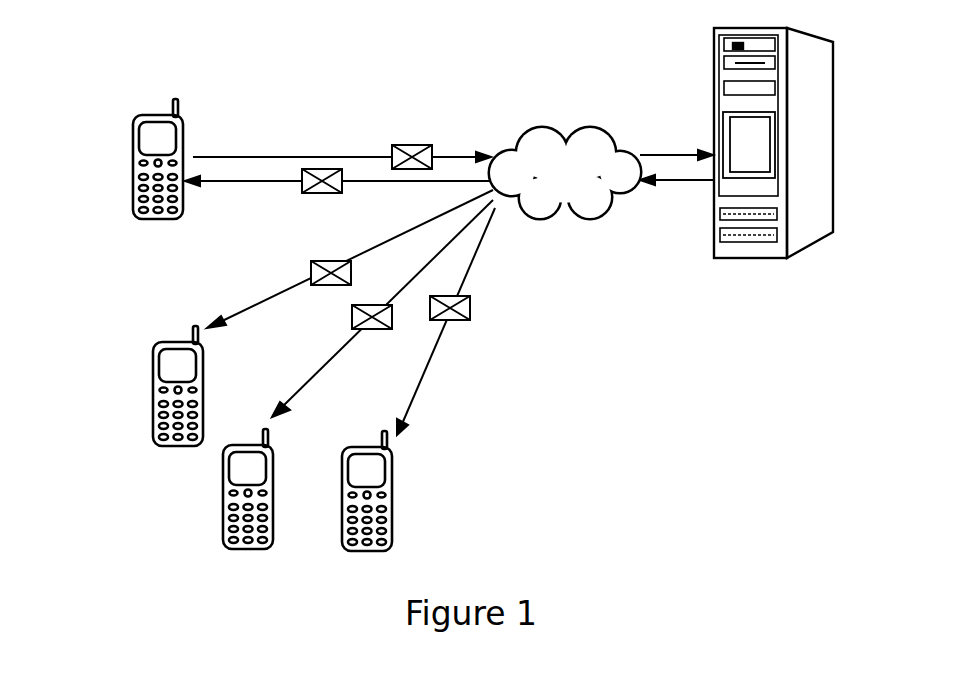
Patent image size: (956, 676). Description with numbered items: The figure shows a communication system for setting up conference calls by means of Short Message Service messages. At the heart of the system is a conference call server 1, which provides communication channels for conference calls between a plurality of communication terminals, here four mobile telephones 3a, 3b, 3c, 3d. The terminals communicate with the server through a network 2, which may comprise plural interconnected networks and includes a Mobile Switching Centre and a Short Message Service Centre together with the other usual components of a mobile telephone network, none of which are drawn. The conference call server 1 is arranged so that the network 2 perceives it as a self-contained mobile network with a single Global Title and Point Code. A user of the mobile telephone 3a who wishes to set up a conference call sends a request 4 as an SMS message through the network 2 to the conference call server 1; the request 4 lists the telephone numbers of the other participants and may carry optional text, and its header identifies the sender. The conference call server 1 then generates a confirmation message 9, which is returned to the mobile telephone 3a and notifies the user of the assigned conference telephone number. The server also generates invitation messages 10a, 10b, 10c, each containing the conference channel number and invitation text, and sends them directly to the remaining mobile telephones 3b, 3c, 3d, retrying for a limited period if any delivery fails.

The conference call server 1 is at (813, 260).
The network 2 is at (578, 232).
The mobile telephone 3a is at (125, 175).
The mobile telephone 3b is at (152, 405).
The mobile telephone 3c is at (222, 530).
The mobile telephone 3d is at (395, 530).
The request 4 is at (342, 143).
The confirmation message 9 is at (337, 192).
The invitation message 10a is at (350, 259).
The invitation message 10b is at (382, 308).
The invitation message 10c is at (449, 321).